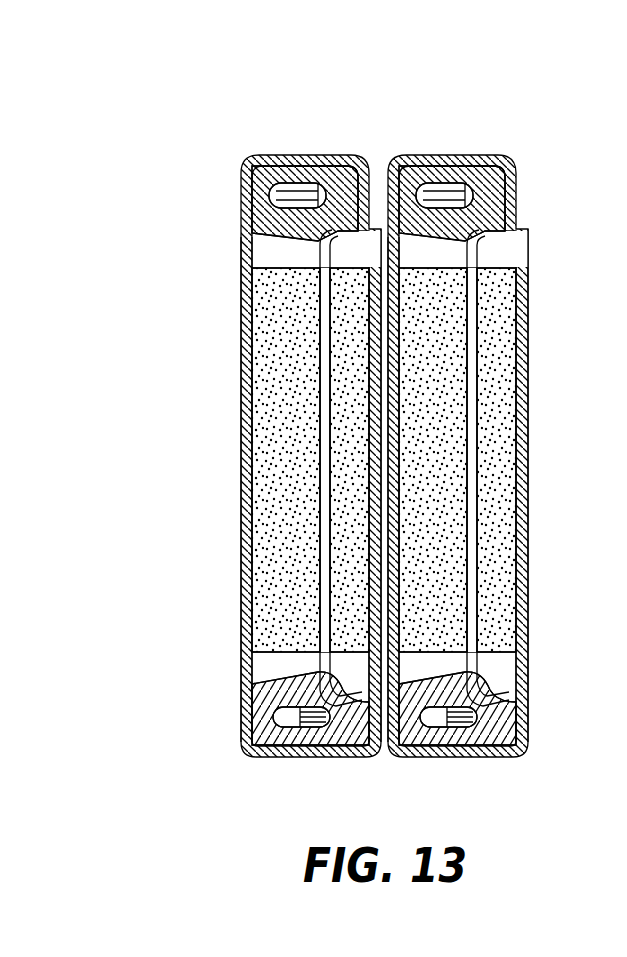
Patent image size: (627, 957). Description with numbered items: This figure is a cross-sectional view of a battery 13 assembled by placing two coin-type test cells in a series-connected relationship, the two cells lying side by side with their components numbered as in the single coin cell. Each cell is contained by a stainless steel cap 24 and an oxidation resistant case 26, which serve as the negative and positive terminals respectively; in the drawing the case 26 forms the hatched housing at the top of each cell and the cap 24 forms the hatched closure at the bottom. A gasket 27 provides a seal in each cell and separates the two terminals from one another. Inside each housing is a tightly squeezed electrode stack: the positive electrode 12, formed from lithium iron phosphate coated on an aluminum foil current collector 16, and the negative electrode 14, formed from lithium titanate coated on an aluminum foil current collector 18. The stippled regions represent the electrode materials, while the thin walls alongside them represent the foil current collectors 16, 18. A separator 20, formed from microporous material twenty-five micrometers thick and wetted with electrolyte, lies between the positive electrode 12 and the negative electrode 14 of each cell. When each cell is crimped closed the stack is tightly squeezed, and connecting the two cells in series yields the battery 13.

The battery 13 is at (462, 95).
The positive electrode 12 is at (440, 300).
The negative electrode 14 is at (495, 352).
The aluminum foil current collector 16 is at (405, 430).
The aluminum foil current collector 18 is at (522, 398).
The separator 20 is at (478, 537).
The stainless steel cap 24 is at (515, 678).
The oxidation resistant case 26 is at (398, 160).
The gasket 27 is at (389, 747).